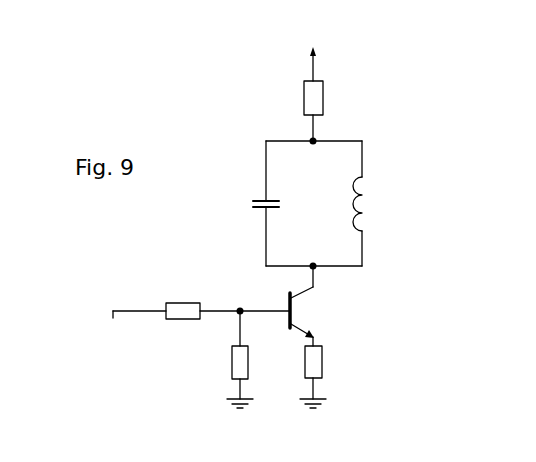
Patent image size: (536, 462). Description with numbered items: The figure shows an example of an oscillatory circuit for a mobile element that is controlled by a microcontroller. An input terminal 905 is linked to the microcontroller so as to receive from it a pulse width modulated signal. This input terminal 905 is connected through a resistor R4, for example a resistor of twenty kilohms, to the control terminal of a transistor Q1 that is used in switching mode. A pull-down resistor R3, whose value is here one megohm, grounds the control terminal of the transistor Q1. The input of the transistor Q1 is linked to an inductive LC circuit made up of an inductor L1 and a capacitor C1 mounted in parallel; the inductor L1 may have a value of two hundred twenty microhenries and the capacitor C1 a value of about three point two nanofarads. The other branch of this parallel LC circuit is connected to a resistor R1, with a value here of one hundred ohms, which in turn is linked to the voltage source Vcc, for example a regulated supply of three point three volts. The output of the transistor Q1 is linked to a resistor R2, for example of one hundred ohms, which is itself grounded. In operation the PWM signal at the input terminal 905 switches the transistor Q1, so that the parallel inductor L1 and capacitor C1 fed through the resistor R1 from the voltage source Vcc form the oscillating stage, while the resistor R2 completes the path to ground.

The resistor R1 is at (323, 98).
The resistor R2 is at (322, 361).
The pull-down resistor R3 is at (232, 361).
The resistor R4 is at (186, 303).
The capacitor C1 is at (256, 198).
The inductor L1 is at (363, 178).
The transistor Q1 is at (290, 300).
The input terminal 905 is at (113, 311).
The voltage source Vcc is at (325, 61).